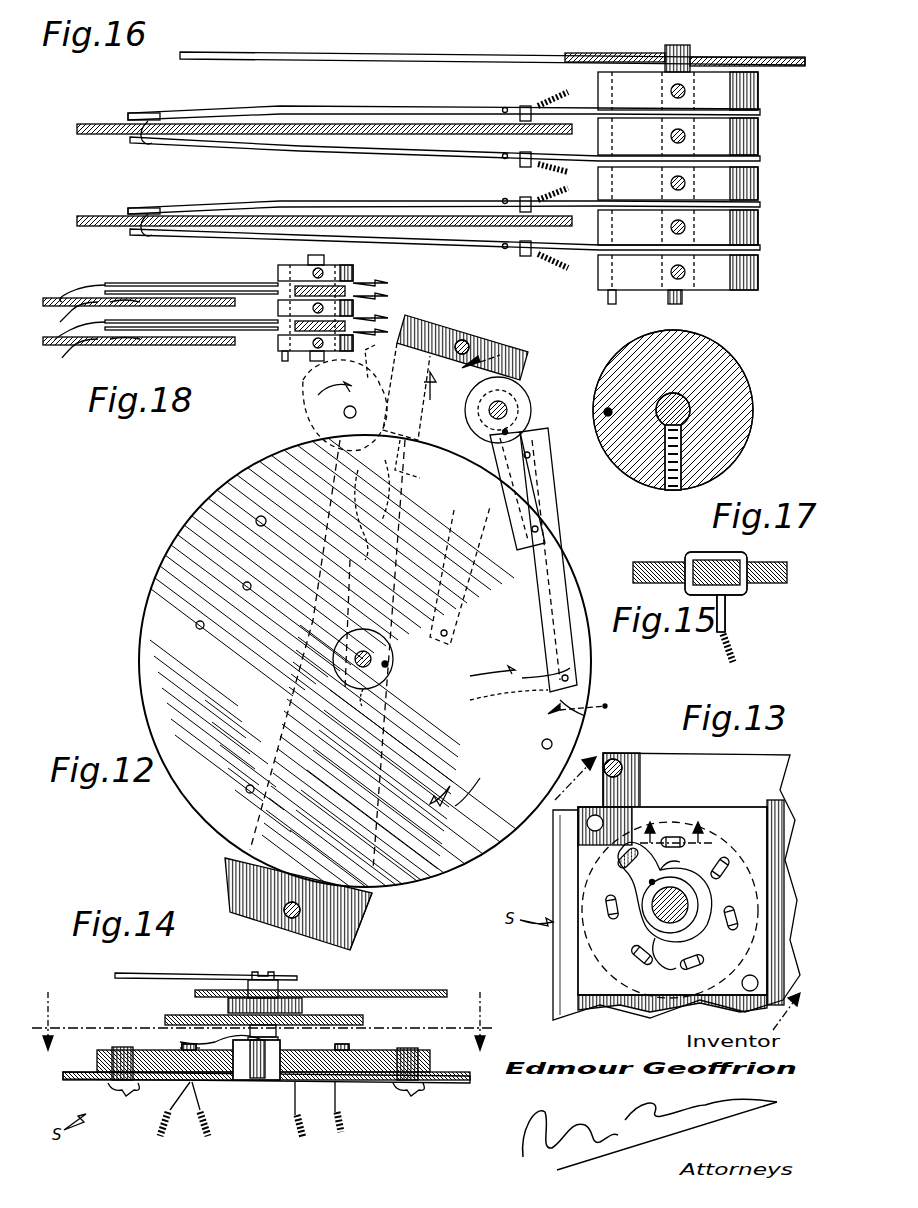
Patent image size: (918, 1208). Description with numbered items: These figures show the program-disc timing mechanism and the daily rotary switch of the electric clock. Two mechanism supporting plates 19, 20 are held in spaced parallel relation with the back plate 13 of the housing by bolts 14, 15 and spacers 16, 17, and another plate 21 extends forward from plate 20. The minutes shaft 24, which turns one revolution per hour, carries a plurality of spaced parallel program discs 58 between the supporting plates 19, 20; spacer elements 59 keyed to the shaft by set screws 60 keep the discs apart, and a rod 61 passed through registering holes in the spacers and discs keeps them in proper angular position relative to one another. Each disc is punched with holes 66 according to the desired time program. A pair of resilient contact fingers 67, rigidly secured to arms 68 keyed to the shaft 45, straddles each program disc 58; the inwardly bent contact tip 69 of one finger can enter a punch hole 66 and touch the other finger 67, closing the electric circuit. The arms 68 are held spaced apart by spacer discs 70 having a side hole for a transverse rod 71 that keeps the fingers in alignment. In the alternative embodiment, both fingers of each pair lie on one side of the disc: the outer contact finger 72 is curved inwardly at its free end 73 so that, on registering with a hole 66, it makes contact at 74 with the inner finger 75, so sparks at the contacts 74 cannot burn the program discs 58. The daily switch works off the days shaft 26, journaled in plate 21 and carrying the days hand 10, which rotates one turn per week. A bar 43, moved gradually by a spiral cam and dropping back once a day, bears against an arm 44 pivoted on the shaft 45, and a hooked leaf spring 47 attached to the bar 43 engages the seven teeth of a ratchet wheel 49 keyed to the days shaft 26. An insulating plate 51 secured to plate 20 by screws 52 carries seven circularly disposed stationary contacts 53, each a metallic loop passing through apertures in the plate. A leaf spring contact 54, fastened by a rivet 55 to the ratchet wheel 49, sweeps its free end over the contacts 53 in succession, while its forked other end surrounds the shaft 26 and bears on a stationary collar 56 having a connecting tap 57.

In FIG. 14, the days hand 10 is at (165, 973).
In FIG. 14, the back plate 13 is at (263, 1012).
In FIG. 13, the bolt 14 is at (677, 884).
In FIG. 13, the bolt 15 is at (677, 825).
In FIG. 12, the spacer 16 is at (531, 540).
In FIG. 12, the spacer 17 is at (466, 342).
In FIG. 12, the mechanism supporting plate 19 is at (356, 914).
In FIG. 16, the mechanism supporting plate 20 is at (464, 55).
In FIG. 13, the mechanism supporting plate 20 is at (662, 752).
In FIG. 14, the mechanism supporting plate 20 is at (470, 1066).
In FIG. 14, the plate 21 is at (422, 990).
In FIG. 12, the minutes shaft 24 is at (364, 690).
In FIG. 12, the days shaft 26 is at (352, 420).
In FIG. 13, the days shaft 26 is at (645, 930).
In FIG. 14, the days shaft 26 is at (278, 982).
In FIG. 12, the bar 43 is at (404, 362).
In FIG. 12, the arm 44 is at (412, 340).
In FIG. 16, the shaft 45 is at (686, 46).
In FIG. 18, the shaft 45 is at (314, 260).
In FIG. 12, the shaft 45 is at (506, 400).
In FIG. 17, the shaft 45 is at (700, 372).
In FIG. 12, the hooked leaf spring 47 is at (362, 478).
In FIG. 12, the ratchet wheel 49 is at (304, 408).
In FIG. 14, the ratchet wheel 49 is at (330, 1015).
In FIG. 15, the insulating plate 51 is at (782, 562).
In FIG. 13, the insulating plate 51 is at (720, 806).
In FIG. 14, the insulating plate 51 is at (106, 1050).
In FIG. 13, the screw 52 is at (596, 815).
In FIG. 14, the screw 52 is at (110, 1088).
In FIG. 15, the stationary electric contact 53 is at (700, 552).
In FIG. 13, the stationary electric contact 53 is at (722, 858).
In FIG. 14, the stationary electric contact 53 is at (184, 1046).
In FIG. 13, the leaf spring contact 54 is at (662, 860).
In FIG. 14, the leaf spring contact 54 is at (178, 1044).
In FIG. 13, the rivet 55 is at (648, 882).
In FIG. 14, the rivet 55 is at (228, 1004).
In FIG. 13, the stationary collar 56 is at (672, 966).
In FIG. 14, the stationary collar 56 is at (240, 1082).
In FIG. 14, the connecting tap 57 is at (292, 1100).
In FIG. 16, the program disc 58 is at (340, 124).
In FIG. 18, the program disc 58 is at (240, 298).
In FIG. 12, the program disc 58 is at (150, 660).
In FIG. 12, the spacer element 59 is at (354, 660).
In FIG. 16, the set screw 60 is at (670, 183).
In FIG. 18, the set screw 60 is at (312, 350).
In FIG. 12, the set screw 60 is at (375, 634).
In FIG. 17, the set screw 60 is at (670, 488).
In FIG. 12, the rod 61 is at (388, 660).
In FIG. 16, the hole 66 is at (188, 118).
In FIG. 18, the hole 66 is at (70, 304).
In FIG. 12, the hole 66 is at (252, 588).
In FIG. 16, the resilient contact finger 67 is at (266, 108).
In FIG. 12, the resilient contact finger 67 is at (562, 548).
In FIG. 16, the arm 68 is at (470, 108).
In FIG. 12, the arm 68 is at (460, 520).
In FIG. 16, the inwardly bent contact tip 69 is at (144, 140).
In FIG. 16, the spacer disc 70 is at (758, 132).
In FIG. 18, the spacer disc 70 is at (360, 262).
In FIG. 12, the spacer disc 70 is at (505, 378).
In FIG. 17, the spacer disc 70 is at (754, 406).
In FIG. 16, the transverse rod 71 is at (608, 296).
In FIG. 18, the transverse rod 71 is at (284, 361).
In FIG. 17, the transverse rod 71 is at (604, 408).
In FIG. 18, the outer contact finger 72 is at (148, 283).
In FIG. 18, the free end 73 is at (66, 298).
In FIG. 18, the contact 74 is at (88, 284).
In FIG. 18, the inner finger 75 is at (204, 291).